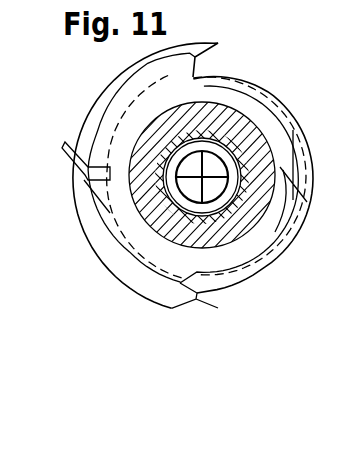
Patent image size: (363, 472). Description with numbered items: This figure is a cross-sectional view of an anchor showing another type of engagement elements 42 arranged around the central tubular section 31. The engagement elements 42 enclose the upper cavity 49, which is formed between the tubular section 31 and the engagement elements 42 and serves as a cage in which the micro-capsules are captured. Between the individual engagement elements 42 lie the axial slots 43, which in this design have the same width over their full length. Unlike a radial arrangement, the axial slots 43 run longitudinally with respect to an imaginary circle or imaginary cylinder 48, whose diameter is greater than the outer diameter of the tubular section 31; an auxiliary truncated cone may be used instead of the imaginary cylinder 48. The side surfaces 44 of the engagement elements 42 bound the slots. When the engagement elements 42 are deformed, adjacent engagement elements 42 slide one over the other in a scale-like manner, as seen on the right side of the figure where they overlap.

The tubular section 31 is at (238, 221).
The engagement elements 42 is at (255, 268).
The axial slots 43 is at (218, 308).
The side surfaces 44 is at (83, 236).
The imaginary cylinder 48 is at (128, 243).
The cavity 49 is at (266, 228).